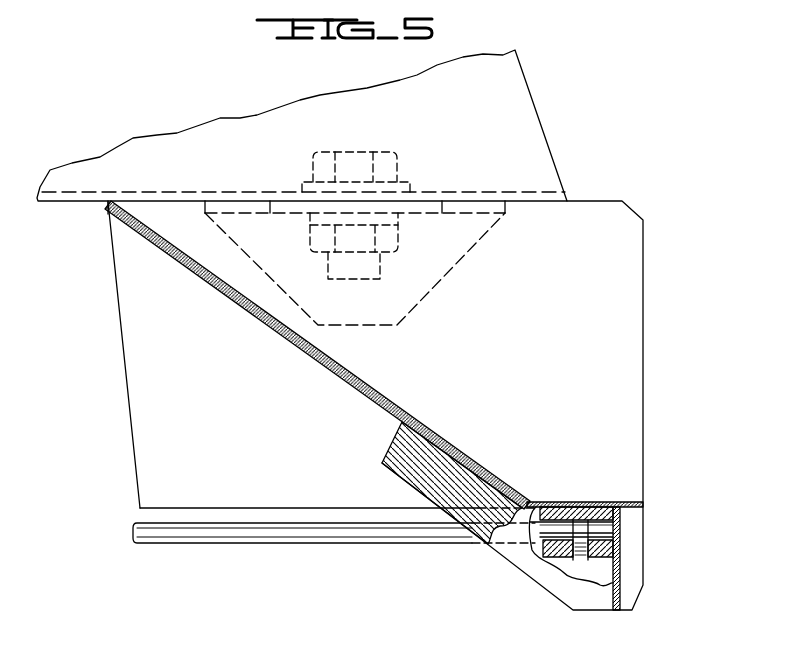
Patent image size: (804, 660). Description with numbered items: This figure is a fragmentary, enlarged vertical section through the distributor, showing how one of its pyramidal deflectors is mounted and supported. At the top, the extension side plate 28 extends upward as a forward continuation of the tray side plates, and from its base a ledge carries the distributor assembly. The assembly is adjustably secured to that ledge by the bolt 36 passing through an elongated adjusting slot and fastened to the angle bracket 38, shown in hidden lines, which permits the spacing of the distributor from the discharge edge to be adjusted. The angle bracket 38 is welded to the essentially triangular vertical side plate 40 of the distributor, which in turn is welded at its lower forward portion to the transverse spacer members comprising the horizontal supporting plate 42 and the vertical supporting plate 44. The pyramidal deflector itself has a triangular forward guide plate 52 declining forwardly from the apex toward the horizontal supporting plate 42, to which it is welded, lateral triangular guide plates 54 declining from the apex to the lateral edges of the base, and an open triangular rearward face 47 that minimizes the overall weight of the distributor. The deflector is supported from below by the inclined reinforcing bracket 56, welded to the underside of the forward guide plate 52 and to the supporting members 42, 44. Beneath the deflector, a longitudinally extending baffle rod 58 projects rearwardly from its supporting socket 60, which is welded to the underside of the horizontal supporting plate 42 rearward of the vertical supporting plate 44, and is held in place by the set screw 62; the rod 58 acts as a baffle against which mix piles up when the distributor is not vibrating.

The extension side plate 28 is at (518, 108).
The bolt 36 is at (363, 148).
The angle bracket 38 is at (470, 252).
The vertical side plate 40 is at (617, 355).
The horizontal supporting plate 42 is at (560, 503).
The vertical supporting plate 44 is at (624, 609).
The triangular rearward face 47 is at (120, 352).
The triangular forward guide plate 52 is at (337, 370).
The lateral triangular guide plate 54 is at (236, 393).
The inclined reinforcing bracket 56 is at (400, 432).
The baffle rod 58 is at (218, 545).
The supporting socket 60 is at (584, 502).
The set screw 62 is at (583, 558).